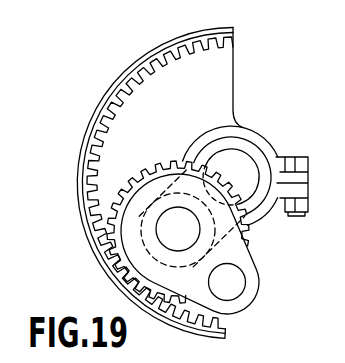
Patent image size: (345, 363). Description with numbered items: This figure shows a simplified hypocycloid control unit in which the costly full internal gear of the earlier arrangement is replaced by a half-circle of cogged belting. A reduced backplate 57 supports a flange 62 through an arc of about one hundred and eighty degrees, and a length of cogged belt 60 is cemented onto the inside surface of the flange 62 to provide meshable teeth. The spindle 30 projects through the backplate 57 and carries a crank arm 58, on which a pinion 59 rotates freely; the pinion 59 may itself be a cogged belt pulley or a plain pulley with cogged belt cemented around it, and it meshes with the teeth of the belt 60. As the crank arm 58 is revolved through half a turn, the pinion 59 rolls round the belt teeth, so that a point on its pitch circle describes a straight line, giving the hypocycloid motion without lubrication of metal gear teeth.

The spindle 30 is at (244, 167).
The backplate 57 is at (153, 182).
The crank arm 58 is at (204, 137).
The pinion 59 is at (148, 163).
The cogged belt 60 is at (156, 74).
The flange 62 is at (82, 222).